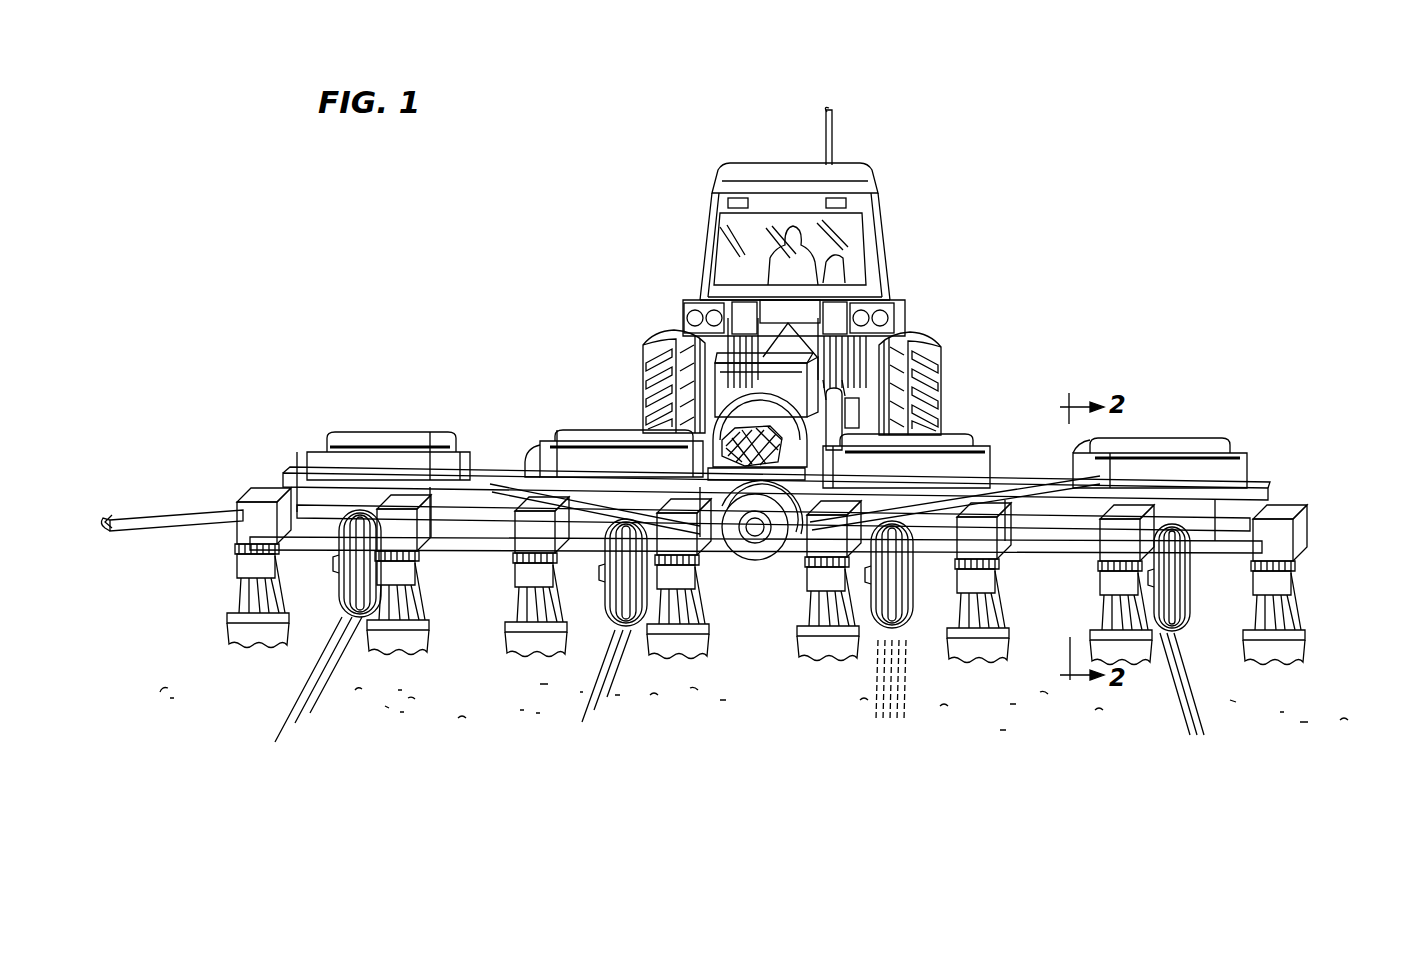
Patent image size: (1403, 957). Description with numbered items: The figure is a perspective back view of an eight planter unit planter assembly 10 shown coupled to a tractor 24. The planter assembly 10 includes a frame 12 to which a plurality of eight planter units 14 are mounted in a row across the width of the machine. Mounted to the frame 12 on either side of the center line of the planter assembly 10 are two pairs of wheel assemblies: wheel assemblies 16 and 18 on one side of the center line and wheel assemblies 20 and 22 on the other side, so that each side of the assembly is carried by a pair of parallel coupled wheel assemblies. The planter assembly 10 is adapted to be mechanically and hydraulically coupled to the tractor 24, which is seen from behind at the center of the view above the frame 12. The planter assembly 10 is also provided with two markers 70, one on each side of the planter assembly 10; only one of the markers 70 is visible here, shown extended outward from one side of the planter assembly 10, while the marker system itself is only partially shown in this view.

The planter assembly 10 is at (1310, 504).
The frame 12 is at (1256, 488).
The planter units 14 is at (240, 652).
The wheel assembly 16 is at (356, 605).
The wheel assembly 18 is at (615, 604).
The wheel assembly 20 is at (908, 616).
The wheel assembly 22 is at (1185, 604).
The tractor 24 is at (893, 248).
The markers 70 is at (180, 512).